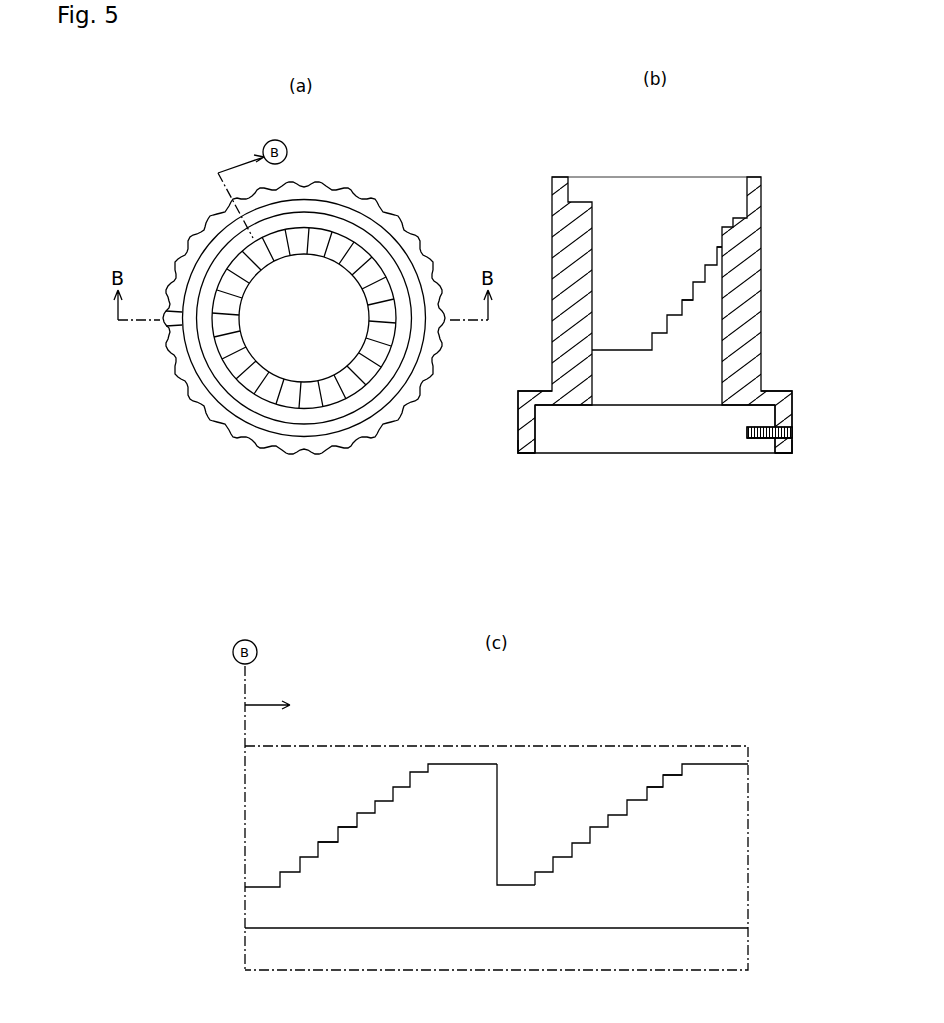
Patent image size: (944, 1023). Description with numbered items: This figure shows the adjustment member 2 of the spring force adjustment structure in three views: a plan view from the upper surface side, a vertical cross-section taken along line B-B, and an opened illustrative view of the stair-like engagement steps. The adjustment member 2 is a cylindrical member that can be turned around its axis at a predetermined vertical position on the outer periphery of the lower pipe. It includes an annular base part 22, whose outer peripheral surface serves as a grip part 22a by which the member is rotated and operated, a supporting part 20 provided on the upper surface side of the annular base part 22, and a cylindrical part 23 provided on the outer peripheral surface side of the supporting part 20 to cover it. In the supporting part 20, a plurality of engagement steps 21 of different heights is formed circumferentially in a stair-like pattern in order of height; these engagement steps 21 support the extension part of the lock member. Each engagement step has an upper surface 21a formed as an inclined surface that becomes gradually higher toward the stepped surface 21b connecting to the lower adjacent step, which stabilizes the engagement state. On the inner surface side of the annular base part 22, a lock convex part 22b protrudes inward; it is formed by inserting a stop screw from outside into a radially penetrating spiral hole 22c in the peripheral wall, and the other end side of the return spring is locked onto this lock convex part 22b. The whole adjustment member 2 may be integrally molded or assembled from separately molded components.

The adjustment member 2 is at (389, 203).
The supporting part 20 is at (307, 235).
The engagement steps 21 is at (322, 240).
The upper surfaces 21a is at (377, 287).
The stepped surfaces 21b is at (718, 240).
The annular base part 22 is at (342, 443).
The grip part 22a is at (393, 422).
The lock convex part 22b is at (759, 440).
The spiral hole 22c is at (797, 432).
The cylindrical part 23 is at (347, 227).